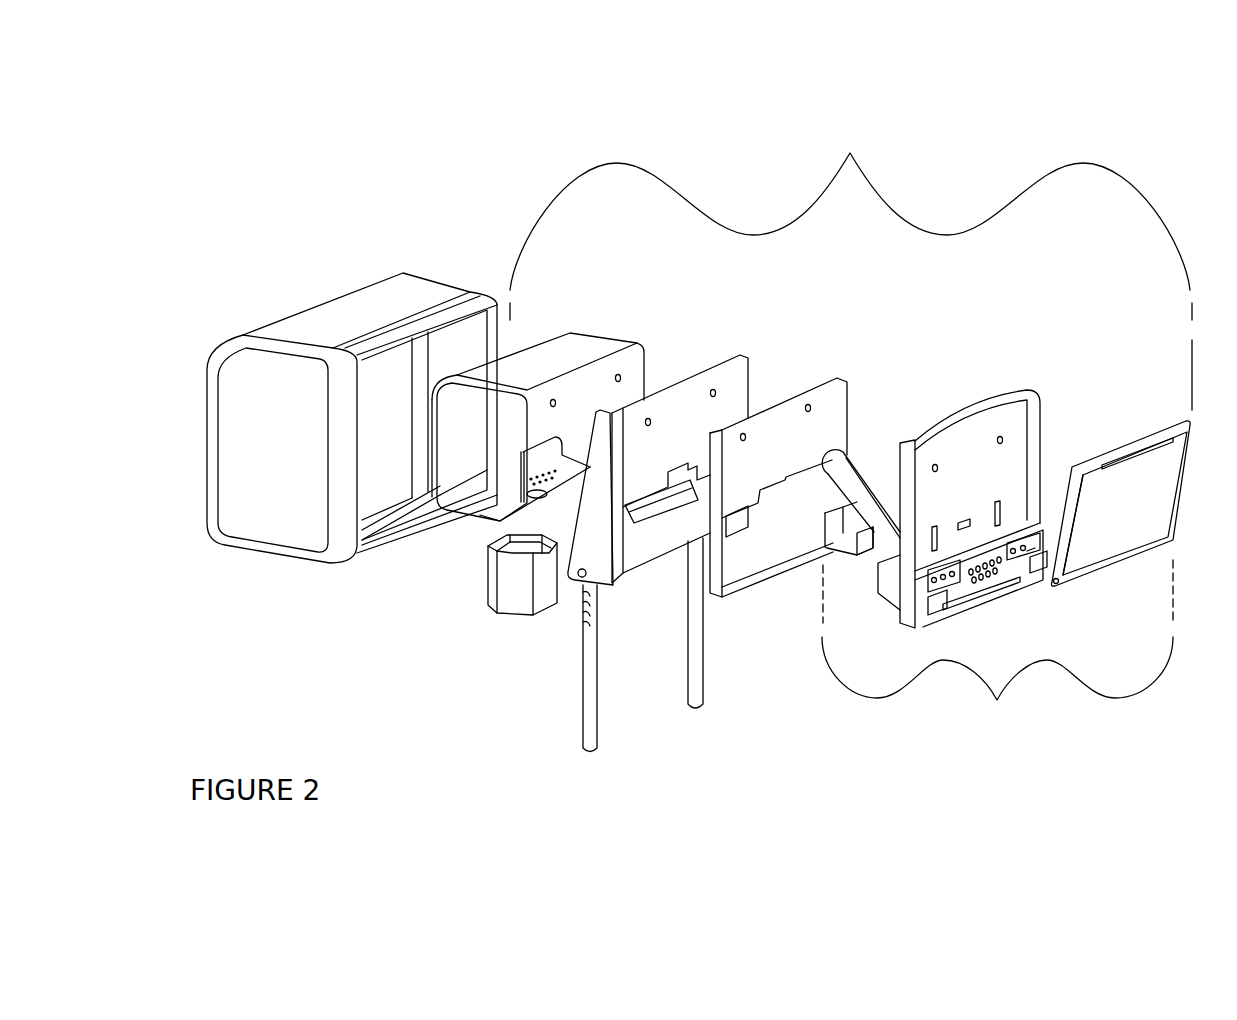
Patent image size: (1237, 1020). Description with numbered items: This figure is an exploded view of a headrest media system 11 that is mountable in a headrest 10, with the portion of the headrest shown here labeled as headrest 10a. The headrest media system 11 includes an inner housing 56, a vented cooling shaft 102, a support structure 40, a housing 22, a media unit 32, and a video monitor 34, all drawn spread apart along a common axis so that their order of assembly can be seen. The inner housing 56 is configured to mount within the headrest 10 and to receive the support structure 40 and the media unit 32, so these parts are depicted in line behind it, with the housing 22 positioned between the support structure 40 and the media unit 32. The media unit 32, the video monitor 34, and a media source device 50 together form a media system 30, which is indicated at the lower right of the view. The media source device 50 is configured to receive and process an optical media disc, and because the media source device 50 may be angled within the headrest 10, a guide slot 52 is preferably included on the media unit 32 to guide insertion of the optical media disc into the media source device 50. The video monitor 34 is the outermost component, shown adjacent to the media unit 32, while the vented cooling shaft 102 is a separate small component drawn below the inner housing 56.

The headrest 10 is at (284, 210).
The housing 10a is at (418, 285).
The headrest media system 11 is at (851, 265).
The housing 22 is at (830, 392).
The media system 30 is at (997, 646).
The media unit 32 is at (996, 398).
The video monitor 34 is at (1153, 552).
The support structure 40 is at (741, 370).
The media source device 50 is at (883, 525).
The guide slot 52 is at (985, 603).
The inner housing 56 is at (596, 343).
The vented cooling shaft 102 is at (518, 608).